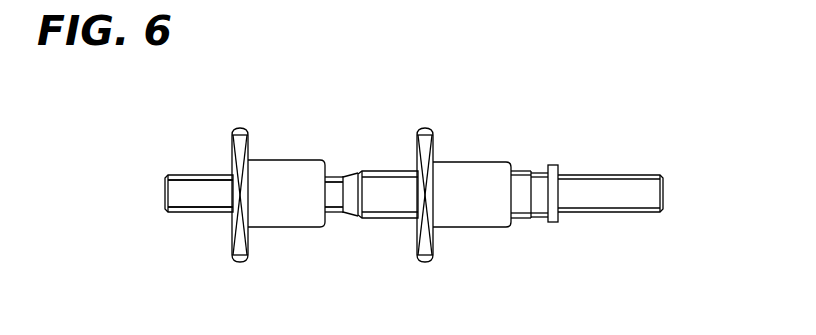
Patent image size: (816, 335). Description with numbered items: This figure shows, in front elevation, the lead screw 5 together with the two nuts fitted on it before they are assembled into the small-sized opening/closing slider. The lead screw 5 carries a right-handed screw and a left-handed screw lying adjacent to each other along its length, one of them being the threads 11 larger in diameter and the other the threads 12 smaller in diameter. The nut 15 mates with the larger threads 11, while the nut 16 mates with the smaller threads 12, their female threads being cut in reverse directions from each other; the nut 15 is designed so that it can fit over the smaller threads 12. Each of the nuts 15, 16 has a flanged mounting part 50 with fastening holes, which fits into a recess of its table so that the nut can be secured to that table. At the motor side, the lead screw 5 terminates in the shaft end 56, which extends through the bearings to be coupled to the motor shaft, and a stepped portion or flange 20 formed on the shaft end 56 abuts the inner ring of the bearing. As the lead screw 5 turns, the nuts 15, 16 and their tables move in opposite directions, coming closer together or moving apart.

The lead screw 5 is at (197, 187).
The threads larger in diameter 11 is at (390, 216).
The threads smaller in diameter 12 is at (193, 212).
The nut 15 is at (472, 172).
The nut 16 is at (275, 180).
The flange 20 is at (558, 167).
The flanged mounting part 50 is at (238, 253).
The shaft end 56 is at (617, 193).